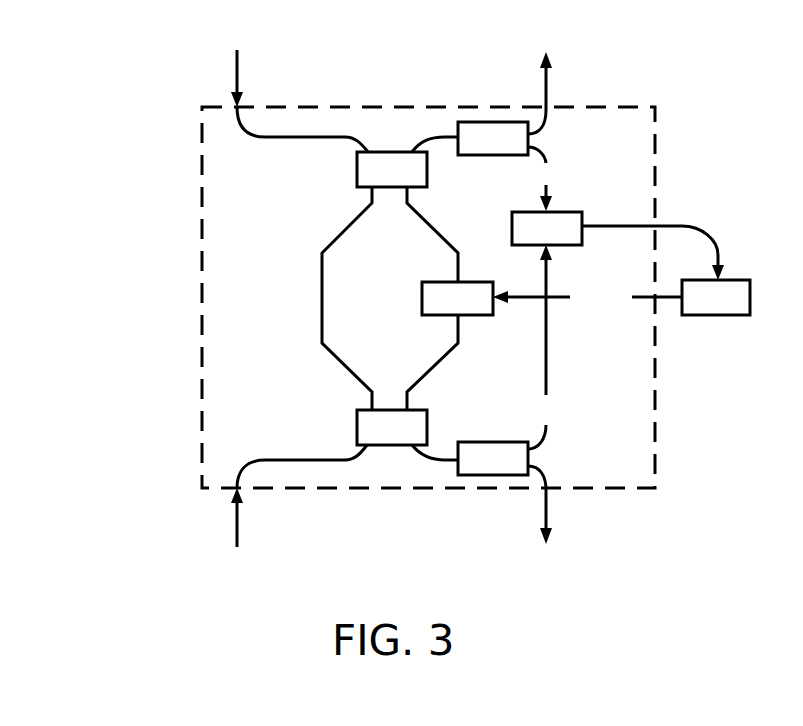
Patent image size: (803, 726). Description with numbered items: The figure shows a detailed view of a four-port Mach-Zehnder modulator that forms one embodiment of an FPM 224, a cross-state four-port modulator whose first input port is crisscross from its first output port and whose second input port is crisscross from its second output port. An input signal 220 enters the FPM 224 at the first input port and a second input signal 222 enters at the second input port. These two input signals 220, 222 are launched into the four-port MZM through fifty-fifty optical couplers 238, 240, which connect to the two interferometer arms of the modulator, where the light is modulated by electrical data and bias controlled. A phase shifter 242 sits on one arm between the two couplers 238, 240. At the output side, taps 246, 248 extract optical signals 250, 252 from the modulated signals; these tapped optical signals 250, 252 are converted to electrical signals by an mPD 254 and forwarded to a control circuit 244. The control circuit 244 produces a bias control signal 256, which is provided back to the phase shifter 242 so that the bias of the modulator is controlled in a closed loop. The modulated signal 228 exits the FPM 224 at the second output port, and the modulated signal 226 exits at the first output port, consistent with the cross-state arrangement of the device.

The input signal 220 is at (290, 85).
The input signal 222 is at (288, 514).
The FPM 224 is at (202, 131).
The modulated signal 226 is at (526, 525).
The modulated signal 228 is at (522, 76).
The 50/50 optical coupler 238 is at (407, 162).
The 50/50 optical coupler 240 is at (407, 435).
The phase shifter 242 is at (407, 298).
The control circuit 244 is at (716, 297).
The tap 246 is at (493, 138).
The tap 248 is at (493, 458).
The optical signal 250 is at (546, 179).
The optical signal 252 is at (546, 347).
The mPD 254 is at (618, 246).
The bias control signal 256 is at (587, 297).